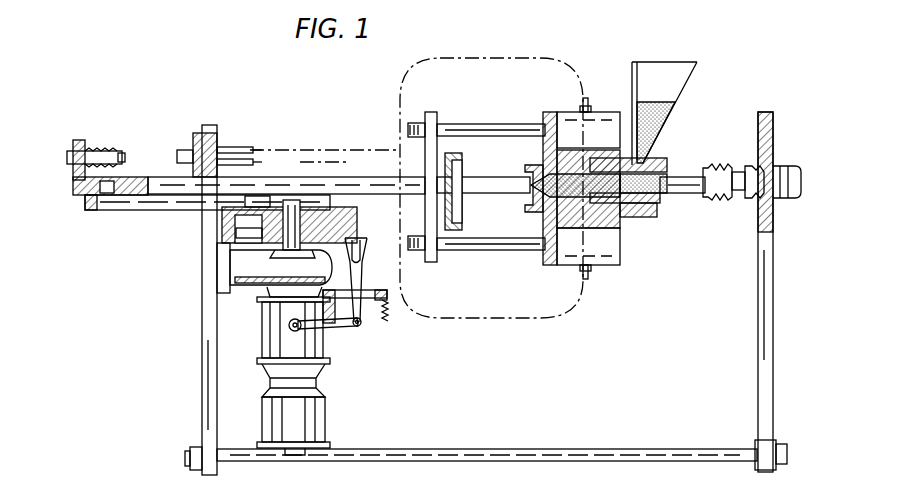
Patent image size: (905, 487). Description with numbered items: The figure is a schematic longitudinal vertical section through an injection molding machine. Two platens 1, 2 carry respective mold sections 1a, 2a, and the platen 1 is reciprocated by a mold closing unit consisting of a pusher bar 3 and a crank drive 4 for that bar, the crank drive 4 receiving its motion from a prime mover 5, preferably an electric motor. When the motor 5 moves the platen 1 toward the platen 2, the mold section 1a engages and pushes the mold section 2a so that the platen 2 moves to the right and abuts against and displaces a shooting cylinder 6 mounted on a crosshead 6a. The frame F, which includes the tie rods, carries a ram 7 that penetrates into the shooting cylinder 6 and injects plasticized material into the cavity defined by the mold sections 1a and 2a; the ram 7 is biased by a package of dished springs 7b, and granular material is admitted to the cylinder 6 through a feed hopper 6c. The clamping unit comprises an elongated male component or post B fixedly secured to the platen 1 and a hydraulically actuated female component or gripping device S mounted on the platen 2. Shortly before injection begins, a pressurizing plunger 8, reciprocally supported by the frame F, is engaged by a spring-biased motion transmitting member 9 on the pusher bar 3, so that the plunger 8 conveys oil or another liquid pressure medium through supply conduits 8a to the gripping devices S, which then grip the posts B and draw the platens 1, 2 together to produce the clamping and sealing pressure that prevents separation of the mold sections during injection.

The platen 1 is at (431, 112).
The mold section 1a is at (460, 160).
The platen 2 is at (549, 112).
The mold section 2a is at (530, 212).
The pusher bar 3 is at (282, 177).
The crank drive 4 is at (187, 207).
The prime mover 5 is at (345, 364).
The shooting cylinder 6 is at (610, 203).
The crosshead 6a is at (650, 217).
The feed hopper 6c is at (672, 84).
The ram 7 is at (682, 177).
The package of dished springs 7b is at (713, 165).
The pressurizing plunger 8 is at (192, 152).
The supply conduits 8a is at (393, 180).
The motion transmitting member 9 is at (121, 157).
The post B is at (480, 124).
The gripping device S is at (606, 120).
The frame F is at (782, 298).